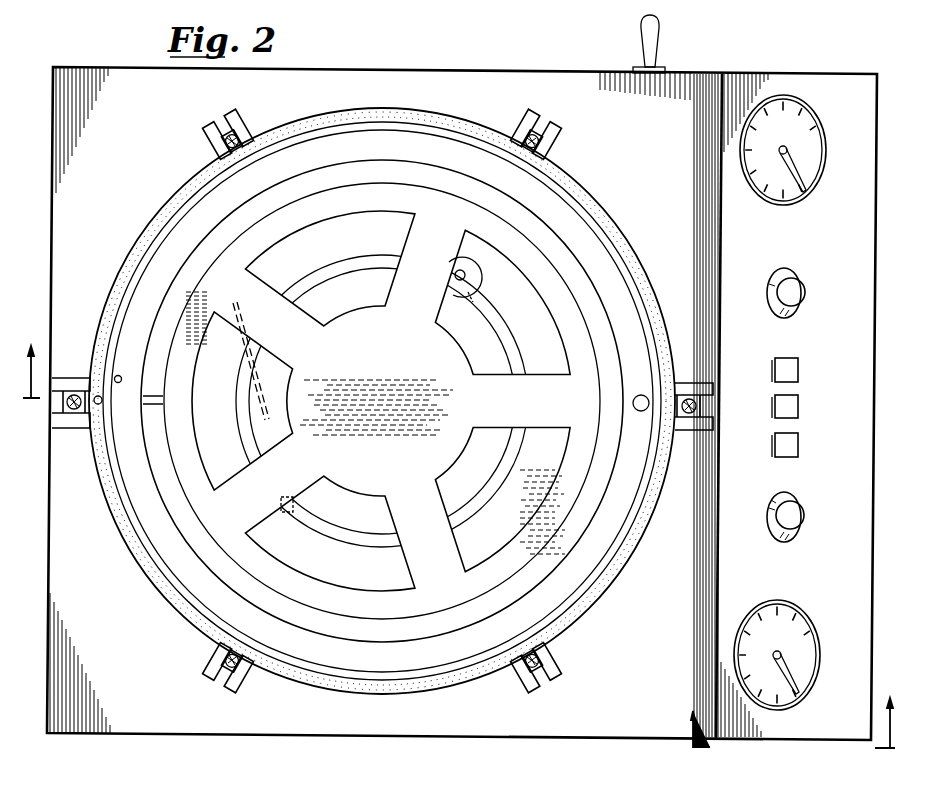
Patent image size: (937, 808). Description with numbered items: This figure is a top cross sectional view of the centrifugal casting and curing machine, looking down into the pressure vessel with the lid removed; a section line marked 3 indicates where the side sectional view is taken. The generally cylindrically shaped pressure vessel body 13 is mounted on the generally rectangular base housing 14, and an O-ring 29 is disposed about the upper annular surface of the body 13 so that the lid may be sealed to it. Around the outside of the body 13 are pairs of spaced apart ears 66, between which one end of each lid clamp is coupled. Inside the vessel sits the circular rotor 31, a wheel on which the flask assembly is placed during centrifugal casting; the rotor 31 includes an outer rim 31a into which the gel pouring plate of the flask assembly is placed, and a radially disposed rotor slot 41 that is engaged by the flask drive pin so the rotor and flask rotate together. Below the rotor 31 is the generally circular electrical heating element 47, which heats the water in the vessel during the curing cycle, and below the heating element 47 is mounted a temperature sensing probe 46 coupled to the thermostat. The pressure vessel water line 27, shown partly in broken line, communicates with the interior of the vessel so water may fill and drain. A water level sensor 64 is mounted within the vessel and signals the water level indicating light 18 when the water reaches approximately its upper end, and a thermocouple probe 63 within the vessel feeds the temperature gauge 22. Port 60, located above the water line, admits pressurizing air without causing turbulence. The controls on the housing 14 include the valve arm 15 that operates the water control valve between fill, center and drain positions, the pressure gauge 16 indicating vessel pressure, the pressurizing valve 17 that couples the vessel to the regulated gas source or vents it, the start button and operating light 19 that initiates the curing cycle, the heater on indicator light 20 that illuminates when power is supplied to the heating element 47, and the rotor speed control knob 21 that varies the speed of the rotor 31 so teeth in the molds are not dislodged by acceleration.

The pressure vessel body 13 is at (414, 124).
The base housing 14 is at (875, 306).
The valve arm 15 is at (655, 41).
The pressure gauge 16 is at (783, 97).
The pressurizing valve 17 is at (793, 279).
The water level indicating light 18 is at (775, 358).
The start button and operating light 19 is at (798, 406).
The heater on indicator light 20 is at (778, 441).
The rotor speed control knob 21 is at (798, 513).
The temperature gauge 22 is at (808, 636).
The pressure vessel water line 27 is at (482, 276).
The O-ring 29 is at (318, 124).
The rotor 31 is at (382, 401).
The outer rim 31a is at (175, 321).
The rotor slot 41 is at (147, 395).
The temperature sensing probe 46 is at (258, 402).
The electrical heating element 47 is at (518, 366).
The port 60 is at (92, 379).
The thermocouple probe 63 is at (120, 383).
The water level sensor 64 is at (639, 395).
The ears 66 is at (203, 140).
The section line 3- 3 is at (459, 562).